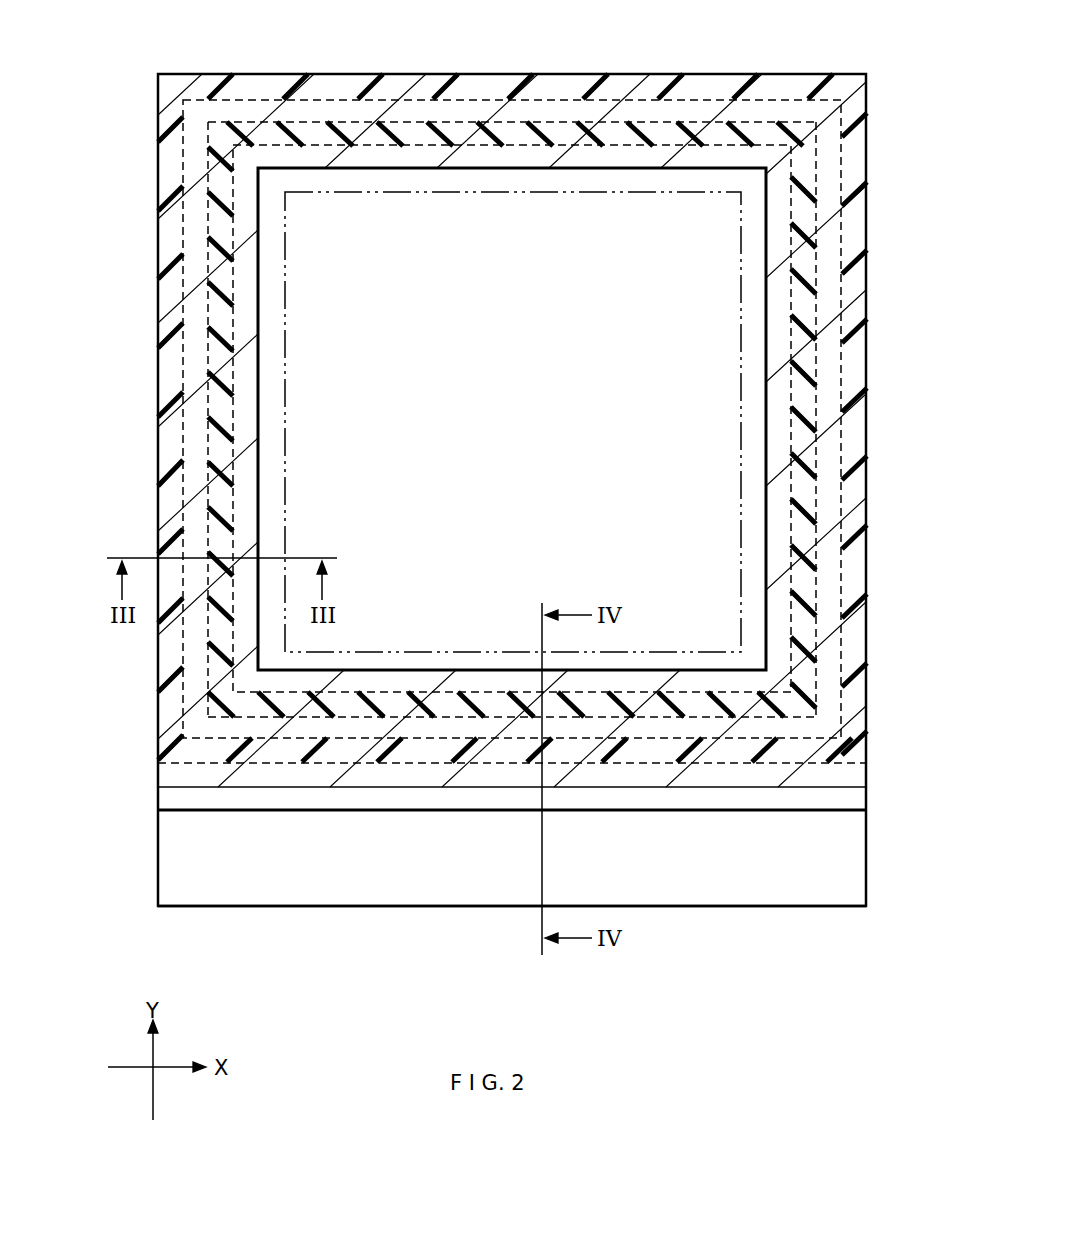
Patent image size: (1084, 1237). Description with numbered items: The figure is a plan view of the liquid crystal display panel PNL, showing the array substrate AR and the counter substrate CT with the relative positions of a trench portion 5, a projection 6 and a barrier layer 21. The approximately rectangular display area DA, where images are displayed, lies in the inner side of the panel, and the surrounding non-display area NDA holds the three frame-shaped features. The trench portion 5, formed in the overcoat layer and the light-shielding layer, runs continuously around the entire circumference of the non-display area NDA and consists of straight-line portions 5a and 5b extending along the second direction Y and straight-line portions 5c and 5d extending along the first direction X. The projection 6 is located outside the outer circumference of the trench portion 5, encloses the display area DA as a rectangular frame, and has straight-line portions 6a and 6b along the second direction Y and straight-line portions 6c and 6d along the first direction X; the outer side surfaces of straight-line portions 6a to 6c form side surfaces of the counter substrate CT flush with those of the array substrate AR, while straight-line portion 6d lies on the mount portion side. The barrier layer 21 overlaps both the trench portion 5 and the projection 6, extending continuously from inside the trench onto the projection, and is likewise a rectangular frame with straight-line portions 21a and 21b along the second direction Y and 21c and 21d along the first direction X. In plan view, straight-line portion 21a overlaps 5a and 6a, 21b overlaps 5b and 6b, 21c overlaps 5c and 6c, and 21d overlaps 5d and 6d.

The liquid crystal display panel PNL is at (145, 872).
The array substrate AR is at (186, 910).
The counter substrate CT is at (186, 814).
The display area DA is at (285, 452).
The non-display area NDA is at (832, 702).
The trench portion 5 is at (707, 116).
The straight-line portion 5a is at (222, 412).
The straight-line portion 5b is at (806, 395).
The straight-line portion 5c is at (413, 132).
The straight-line portion 5d is at (457, 705).
The projection 6 is at (787, 66).
The straight-line portion 6a is at (167, 453).
The straight-line portion 6b is at (856, 494).
The straight-line portion 6c is at (493, 87).
The straight-line portion 6d is at (627, 752).
The barrier layer 21 is at (416, 790).
The straight-line portion 21a is at (192, 652).
The straight-line portion 21b is at (830, 570).
The straight-line portion 21c is at (563, 108).
The straight-line portion 21d is at (368, 728).